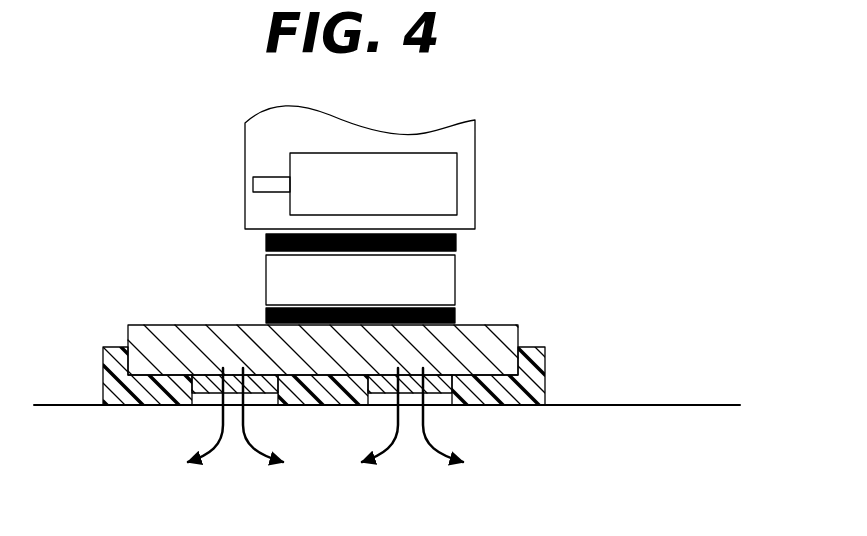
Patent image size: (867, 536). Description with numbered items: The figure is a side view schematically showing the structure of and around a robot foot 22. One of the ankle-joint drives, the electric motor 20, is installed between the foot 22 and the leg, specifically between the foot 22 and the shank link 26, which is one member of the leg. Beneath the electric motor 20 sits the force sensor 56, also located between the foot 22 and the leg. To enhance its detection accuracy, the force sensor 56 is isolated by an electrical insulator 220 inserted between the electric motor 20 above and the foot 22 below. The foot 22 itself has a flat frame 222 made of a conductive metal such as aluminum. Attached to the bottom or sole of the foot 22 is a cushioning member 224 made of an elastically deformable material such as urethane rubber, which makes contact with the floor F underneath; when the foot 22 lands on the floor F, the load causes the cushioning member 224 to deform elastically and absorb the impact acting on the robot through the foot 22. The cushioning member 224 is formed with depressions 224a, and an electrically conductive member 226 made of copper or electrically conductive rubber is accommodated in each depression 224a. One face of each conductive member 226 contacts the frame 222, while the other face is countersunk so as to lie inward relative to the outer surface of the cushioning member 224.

The electric motor 20 is at (358, 198).
The foot 22 is at (374, 330).
The shank link 26 is at (475, 148).
The force sensor 56 is at (346, 294).
The electrical insulator 220 is at (265, 245).
The flat frame 222 is at (297, 362).
The cushioning member 224 is at (545, 373).
The depressions 224a is at (268, 405).
The electrically conductive member 226 is at (195, 407).
The floor F is at (64, 405).